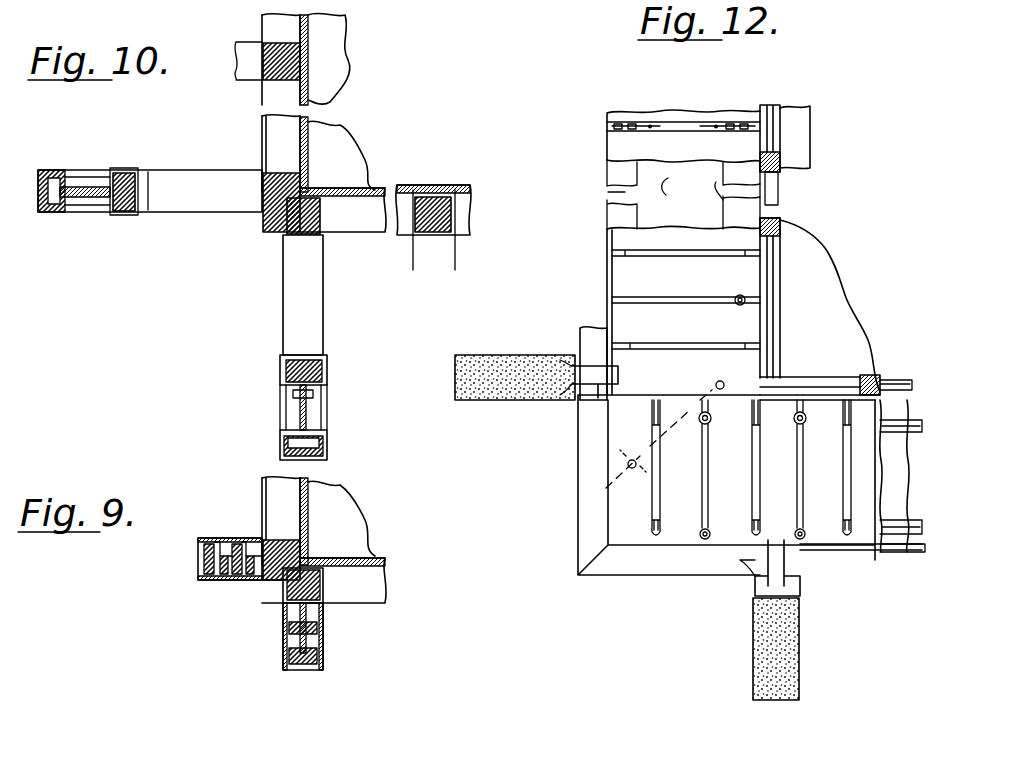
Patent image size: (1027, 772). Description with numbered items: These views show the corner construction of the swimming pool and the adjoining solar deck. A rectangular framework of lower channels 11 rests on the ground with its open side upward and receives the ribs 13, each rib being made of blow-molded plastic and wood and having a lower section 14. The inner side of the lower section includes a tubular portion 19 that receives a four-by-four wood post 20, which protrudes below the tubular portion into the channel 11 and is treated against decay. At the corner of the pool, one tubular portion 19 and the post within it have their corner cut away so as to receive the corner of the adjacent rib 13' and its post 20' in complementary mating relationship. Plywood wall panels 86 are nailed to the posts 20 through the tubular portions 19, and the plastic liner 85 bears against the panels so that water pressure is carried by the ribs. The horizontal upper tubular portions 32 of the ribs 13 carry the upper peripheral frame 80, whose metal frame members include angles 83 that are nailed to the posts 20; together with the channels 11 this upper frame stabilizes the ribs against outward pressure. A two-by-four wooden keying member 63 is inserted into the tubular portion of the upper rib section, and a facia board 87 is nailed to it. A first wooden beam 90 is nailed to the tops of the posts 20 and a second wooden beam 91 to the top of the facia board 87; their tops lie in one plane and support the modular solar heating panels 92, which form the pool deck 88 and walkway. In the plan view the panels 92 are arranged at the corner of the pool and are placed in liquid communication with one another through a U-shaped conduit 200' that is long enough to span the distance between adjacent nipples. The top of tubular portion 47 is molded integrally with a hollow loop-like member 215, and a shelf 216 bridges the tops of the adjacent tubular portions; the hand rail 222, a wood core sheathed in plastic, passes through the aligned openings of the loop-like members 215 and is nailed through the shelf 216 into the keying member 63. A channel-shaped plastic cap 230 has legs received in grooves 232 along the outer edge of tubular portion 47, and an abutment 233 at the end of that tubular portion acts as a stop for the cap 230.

In FIG. 10, the lower channels 11 is at (262, 100).
In FIG. 9, the lower channels 11 is at (262, 492).
In FIG. 10, the ribs 13 is at (320, 194).
In FIG. 9, the ribs 13 is at (337, 649).
In FIG. 12, the ribs 13 is at (686, 434).
In FIG. 10, the connector beam 13' is at (145, 224).
In FIG. 9, the connector beam 13' is at (179, 569).
In FIG. 9, the lower section 14 is at (283, 615).
In FIG. 12, the lower section 14 is at (535, 260).
In FIG. 10, the tubular portion 19 is at (262, 100).
In FIG. 9, the tubular portion 19 is at (262, 525).
In FIG. 10, the wood post 20 is at (325, 59).
In FIG. 10, the hatched block 20' is at (241, 218).
In FIG. 9, the hatched block 20' is at (241, 581).
In FIG. 10, the horizontal upper tubular portions 32 is at (295, 287).
In FIG. 12, the tubular portion 47 is at (580, 355).
In FIG. 10, the keying member 63 is at (322, 368).
In FIG. 12, the angles 83 is at (910, 440).
In FIG. 10, the plastic liner 85 is at (308, 124).
In FIG. 9, the plastic liner 85 is at (308, 500).
In FIG. 12, the plastic liner 85 is at (810, 235).
In FIG. 10, the plywood wall panels 86 is at (392, 188).
In FIG. 9, the plywood wall panels 86 is at (385, 565).
In FIG. 12, the facia board 87 is at (607, 200).
In FIG. 12, the pool deck 88 is at (693, 114).
In FIG. 12, the first wooden beam 90 is at (711, 198).
In FIG. 12, the second wooden beam 91 is at (678, 196).
In FIG. 12, the solar heating panels 92 is at (607, 140).
In FIG. 12, the U-shaped conduit 200' is at (665, 421).
In FIG. 12, the hollow loop-like member 215 is at (578, 410).
In FIG. 12, the shelf 216 is at (580, 405).
In FIG. 12, the hand rail 222 is at (590, 500).
In FIG. 12, the plastic cap 230 is at (500, 355).
In FIG. 12, the grooves 232 is at (778, 202).
In FIG. 12, the abutment 233 is at (780, 345).
In FIG. 12, the upper peripheral rectangular frame 80 is at (733, 758).